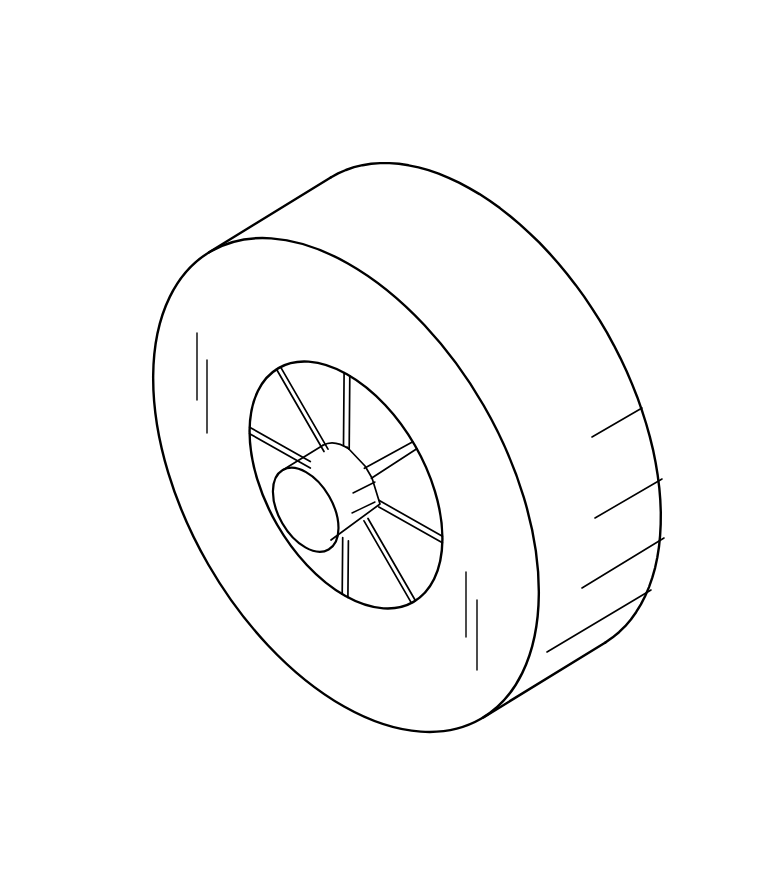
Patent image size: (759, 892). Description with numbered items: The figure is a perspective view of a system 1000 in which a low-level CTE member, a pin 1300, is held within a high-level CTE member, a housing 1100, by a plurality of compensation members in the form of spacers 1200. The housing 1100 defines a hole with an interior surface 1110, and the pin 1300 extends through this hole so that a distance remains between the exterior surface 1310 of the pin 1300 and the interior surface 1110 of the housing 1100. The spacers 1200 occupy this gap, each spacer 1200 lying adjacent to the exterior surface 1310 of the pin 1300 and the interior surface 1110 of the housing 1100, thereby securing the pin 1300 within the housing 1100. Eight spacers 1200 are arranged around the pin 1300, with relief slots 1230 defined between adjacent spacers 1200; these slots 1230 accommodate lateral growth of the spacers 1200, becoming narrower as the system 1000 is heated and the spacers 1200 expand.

The system 1000 is at (206, 106).
The housing 1100 is at (438, 213).
The interior surface 1110 is at (250, 437).
The spacers 1200 is at (422, 488).
The relief slots 1230 is at (341, 375).
The pin 1300 is at (292, 517).
The exterior surface 1310 is at (313, 463).